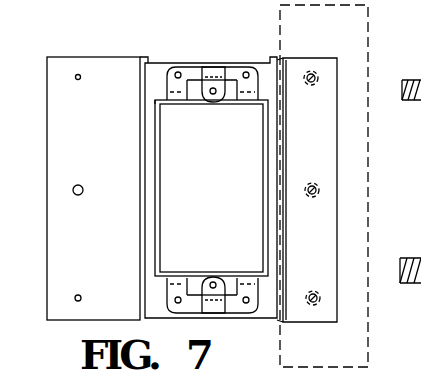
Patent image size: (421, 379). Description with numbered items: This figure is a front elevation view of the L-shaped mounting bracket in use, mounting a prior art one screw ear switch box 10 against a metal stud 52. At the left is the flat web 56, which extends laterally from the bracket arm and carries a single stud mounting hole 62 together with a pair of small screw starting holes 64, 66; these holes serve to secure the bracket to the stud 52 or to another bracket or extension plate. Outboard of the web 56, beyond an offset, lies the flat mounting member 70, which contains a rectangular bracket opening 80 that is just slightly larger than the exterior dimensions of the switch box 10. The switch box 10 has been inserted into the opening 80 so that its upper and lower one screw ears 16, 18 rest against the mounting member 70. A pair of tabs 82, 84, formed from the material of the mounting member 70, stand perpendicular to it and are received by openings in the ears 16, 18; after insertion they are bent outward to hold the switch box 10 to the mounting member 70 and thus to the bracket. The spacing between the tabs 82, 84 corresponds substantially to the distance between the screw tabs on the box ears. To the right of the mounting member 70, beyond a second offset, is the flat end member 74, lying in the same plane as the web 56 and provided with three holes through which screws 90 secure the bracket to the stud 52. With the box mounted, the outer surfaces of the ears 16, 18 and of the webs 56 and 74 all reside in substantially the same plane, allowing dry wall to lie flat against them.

The one screw ear switch box 10 is at (163, 199).
The one screw ear 16 is at (187, 68).
The one screw ear 18 is at (187, 302).
The metal stud 52 is at (365, 40).
The flat web 56 is at (90, 65).
The stud mounting hole 62 is at (81, 185).
The screw starting hole 64 is at (78, 80).
The screw starting hole 66 is at (78, 295).
The flat mounting member 70 is at (270, 68).
The flat end member 74 is at (308, 152).
The bracket opening 80 is at (152, 107).
The tab 82 is at (211, 68).
The tab 84 is at (215, 313).
The screws 90 is at (310, 70).